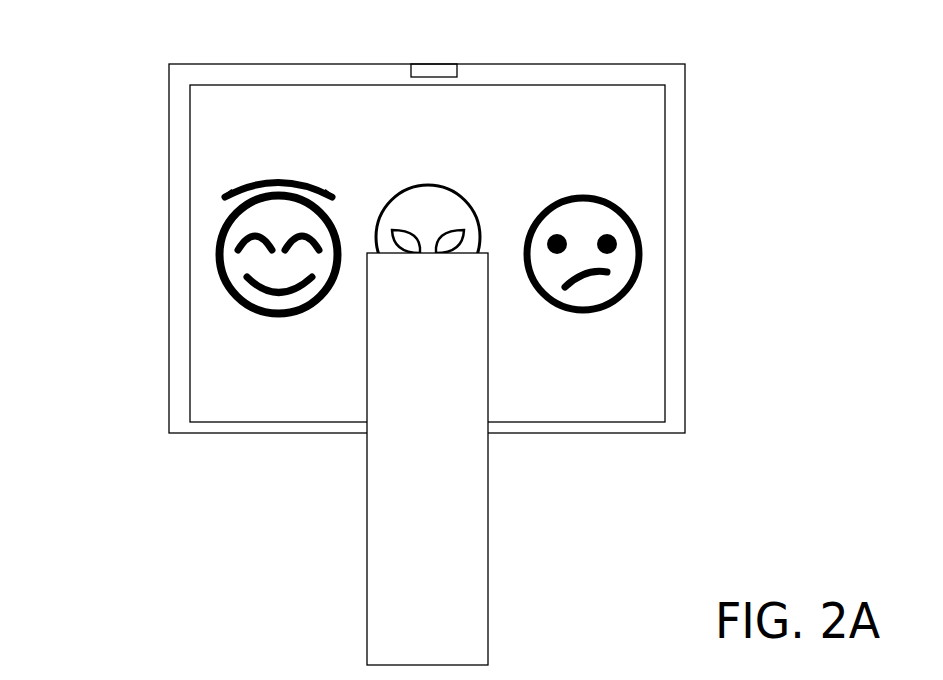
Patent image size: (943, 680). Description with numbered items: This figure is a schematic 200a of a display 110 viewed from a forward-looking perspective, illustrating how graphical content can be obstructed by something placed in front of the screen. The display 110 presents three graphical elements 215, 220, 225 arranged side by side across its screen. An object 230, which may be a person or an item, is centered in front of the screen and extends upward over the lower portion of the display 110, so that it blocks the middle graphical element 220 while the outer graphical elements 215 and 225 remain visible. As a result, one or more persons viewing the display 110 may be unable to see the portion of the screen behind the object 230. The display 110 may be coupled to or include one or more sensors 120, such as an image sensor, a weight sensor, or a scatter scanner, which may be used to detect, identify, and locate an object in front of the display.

The schematic 200a is at (150, 66).
The display 110 is at (169, 170).
The sensors 120 is at (438, 63).
The graphical element 215 is at (215, 253).
The graphical element 220 is at (442, 187).
The graphical element 225 is at (598, 195).
The object 230 is at (367, 542).